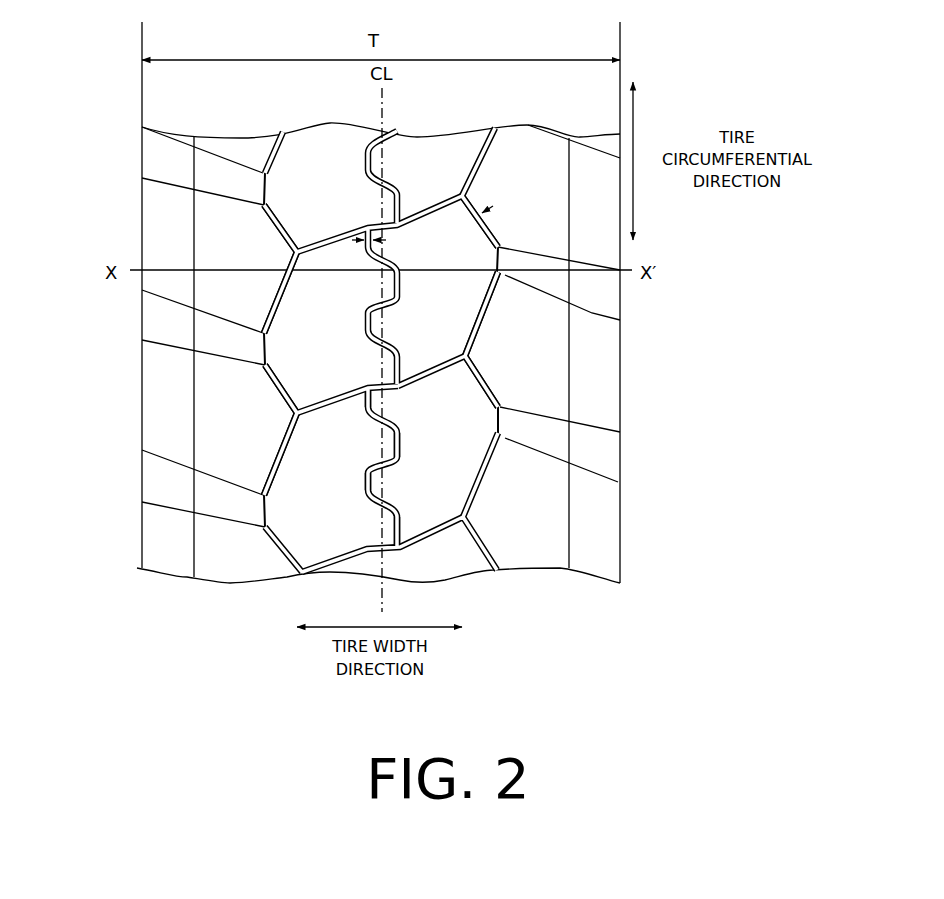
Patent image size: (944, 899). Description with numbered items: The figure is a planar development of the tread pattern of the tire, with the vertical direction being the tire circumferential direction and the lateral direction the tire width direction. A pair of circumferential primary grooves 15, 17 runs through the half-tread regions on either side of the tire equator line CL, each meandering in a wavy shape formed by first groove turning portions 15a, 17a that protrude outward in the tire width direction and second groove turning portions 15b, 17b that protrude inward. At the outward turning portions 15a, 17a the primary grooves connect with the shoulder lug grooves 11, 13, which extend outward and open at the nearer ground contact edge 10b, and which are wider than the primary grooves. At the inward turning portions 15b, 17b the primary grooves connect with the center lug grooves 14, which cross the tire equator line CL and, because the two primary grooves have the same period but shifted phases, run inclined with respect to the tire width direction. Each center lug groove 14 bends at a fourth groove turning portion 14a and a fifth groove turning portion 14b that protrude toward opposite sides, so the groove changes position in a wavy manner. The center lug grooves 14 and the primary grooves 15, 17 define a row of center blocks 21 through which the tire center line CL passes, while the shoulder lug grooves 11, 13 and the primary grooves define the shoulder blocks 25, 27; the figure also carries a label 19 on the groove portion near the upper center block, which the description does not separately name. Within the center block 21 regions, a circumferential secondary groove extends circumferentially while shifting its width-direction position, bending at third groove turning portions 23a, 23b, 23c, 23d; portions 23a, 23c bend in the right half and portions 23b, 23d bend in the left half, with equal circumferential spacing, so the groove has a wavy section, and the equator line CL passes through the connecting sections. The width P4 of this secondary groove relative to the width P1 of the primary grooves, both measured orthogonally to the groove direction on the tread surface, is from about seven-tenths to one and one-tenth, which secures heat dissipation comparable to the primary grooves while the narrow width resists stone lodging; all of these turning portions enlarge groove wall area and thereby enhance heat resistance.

The ground contact edge 10b is at (187, 548).
The shoulder lug groove 11 is at (615, 448).
The shoulder lug groove 13 is at (160, 473).
The center lug groove 14 is at (417, 542).
The fourth groove turning portion 14a is at (365, 218).
The fifth groove turning portion 14b is at (401, 230).
The circumferential primary groove 15 is at (470, 540).
The first groove turning portion 15a is at (492, 277).
The second groove turning portion 15b is at (472, 193).
The circumferential primary groove 17 is at (277, 540).
The first groove turning portion 17a is at (272, 335).
The second groove turning portion 17b is at (293, 255).
The lug groove 19 is at (430, 205).
The center block 21 is at (327, 543).
The third groove turning portion 23a is at (365, 415).
The third groove turning portion 23b is at (403, 447).
The third groove turning portion 23c is at (362, 492).
The third groove turning portion 23d is at (400, 513).
The shoulder block 25 is at (593, 163).
The shoulder block 27 is at (237, 153).
The width of circumferential primary groove P1 is at (472, 221).
The width of circumferential secondary groove P4 is at (358, 241).